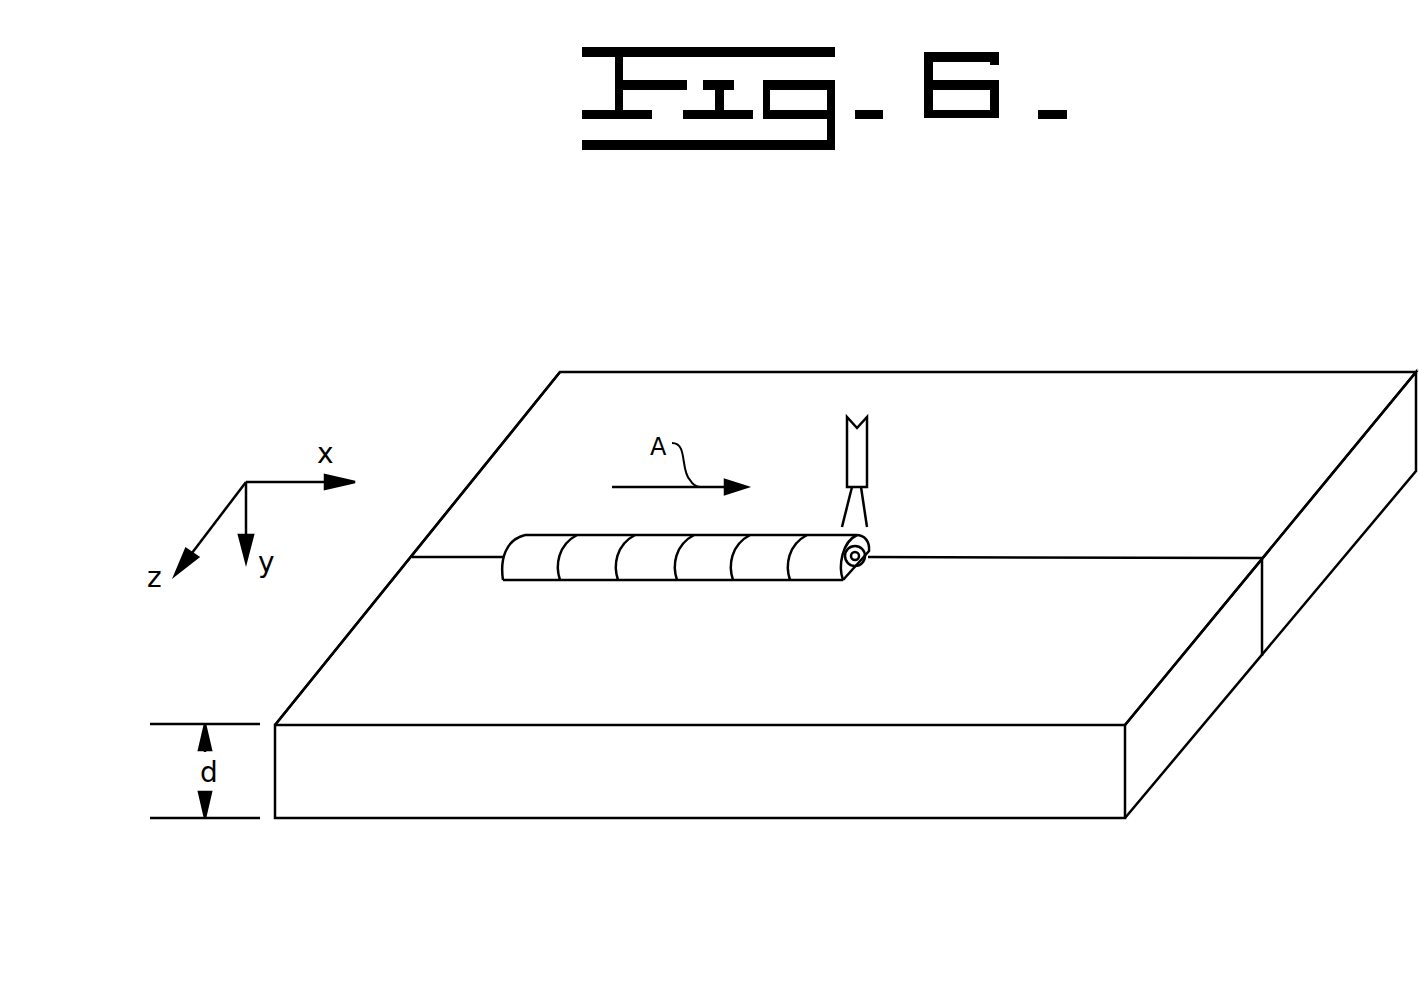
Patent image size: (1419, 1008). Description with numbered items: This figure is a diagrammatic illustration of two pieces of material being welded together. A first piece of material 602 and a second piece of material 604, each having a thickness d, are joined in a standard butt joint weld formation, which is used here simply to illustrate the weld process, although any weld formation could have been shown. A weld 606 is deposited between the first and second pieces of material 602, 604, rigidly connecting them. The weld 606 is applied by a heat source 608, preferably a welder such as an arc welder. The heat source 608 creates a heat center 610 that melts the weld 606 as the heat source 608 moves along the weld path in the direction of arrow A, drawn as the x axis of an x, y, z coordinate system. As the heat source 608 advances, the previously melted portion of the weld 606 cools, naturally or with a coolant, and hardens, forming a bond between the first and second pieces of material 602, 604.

The first piece of material 602 is at (867, 818).
The second piece of material 604 is at (1023, 372).
The weld 606 is at (597, 580).
The heat source 608 is at (867, 472).
The heat center 610 is at (868, 557).